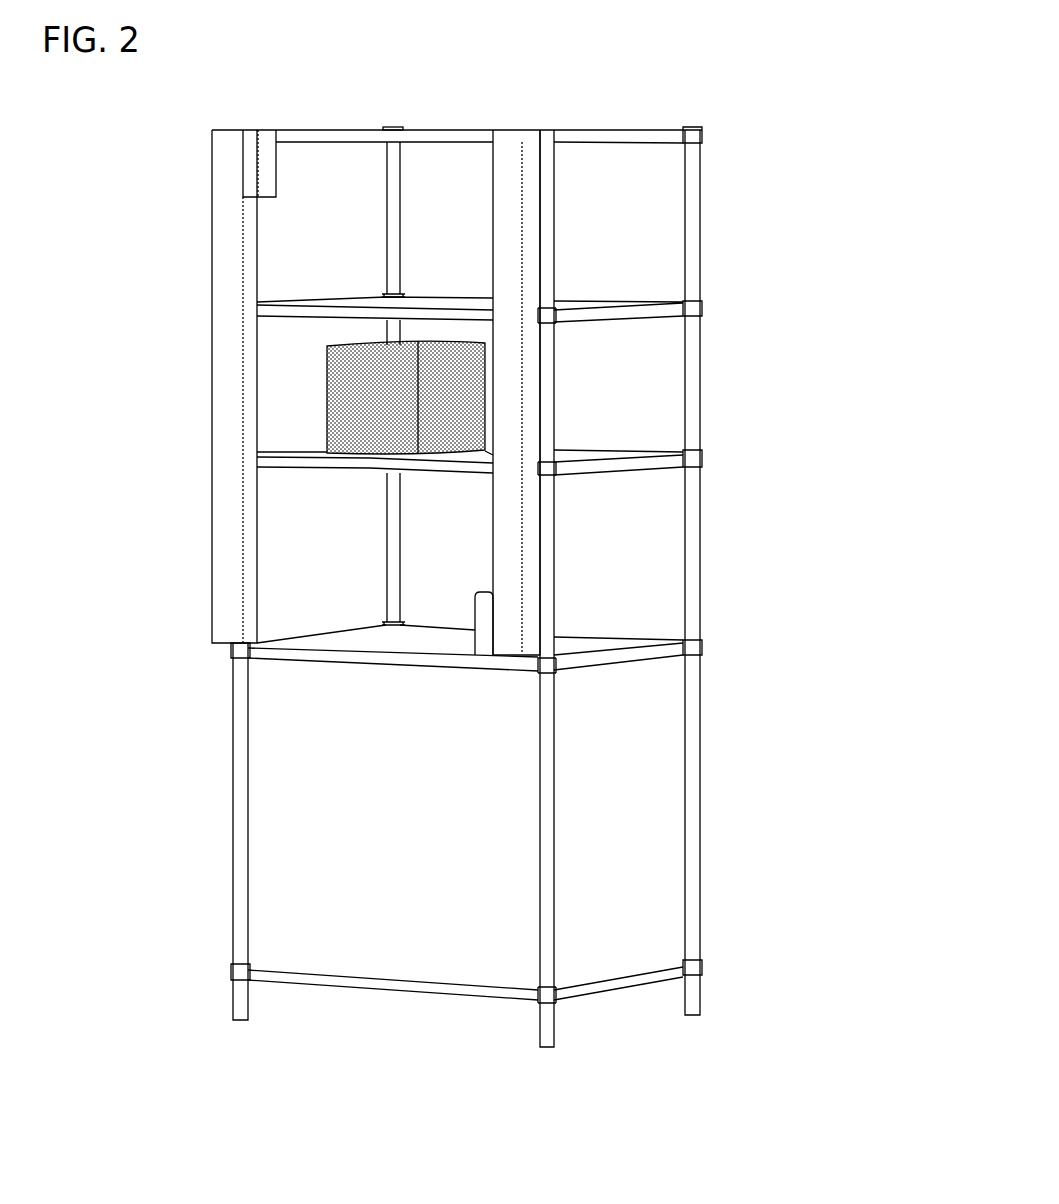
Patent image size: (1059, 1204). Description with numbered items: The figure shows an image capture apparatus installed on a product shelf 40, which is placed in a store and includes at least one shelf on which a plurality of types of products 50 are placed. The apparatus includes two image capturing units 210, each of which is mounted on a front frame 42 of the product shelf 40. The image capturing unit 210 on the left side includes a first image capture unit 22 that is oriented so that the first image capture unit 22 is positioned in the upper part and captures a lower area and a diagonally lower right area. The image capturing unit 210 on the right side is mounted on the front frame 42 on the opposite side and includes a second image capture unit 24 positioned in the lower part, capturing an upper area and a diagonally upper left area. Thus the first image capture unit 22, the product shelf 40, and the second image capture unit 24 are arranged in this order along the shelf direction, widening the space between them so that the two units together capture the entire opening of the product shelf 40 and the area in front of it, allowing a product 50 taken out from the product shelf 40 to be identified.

The image capturing unit 210 is at (503, 183).
The first image capture unit 22 is at (276, 175).
The second image capture unit 24 is at (482, 591).
The product shelf 40 is at (698, 773).
The front frame 42 is at (548, 177).
The product 50 is at (340, 383).